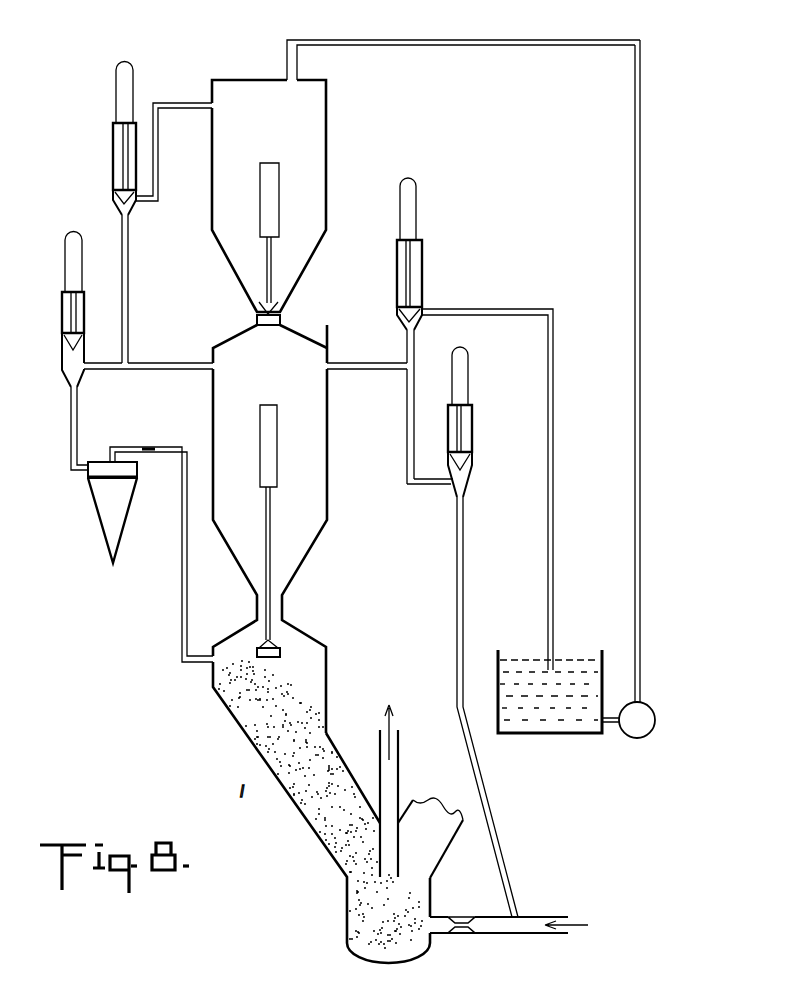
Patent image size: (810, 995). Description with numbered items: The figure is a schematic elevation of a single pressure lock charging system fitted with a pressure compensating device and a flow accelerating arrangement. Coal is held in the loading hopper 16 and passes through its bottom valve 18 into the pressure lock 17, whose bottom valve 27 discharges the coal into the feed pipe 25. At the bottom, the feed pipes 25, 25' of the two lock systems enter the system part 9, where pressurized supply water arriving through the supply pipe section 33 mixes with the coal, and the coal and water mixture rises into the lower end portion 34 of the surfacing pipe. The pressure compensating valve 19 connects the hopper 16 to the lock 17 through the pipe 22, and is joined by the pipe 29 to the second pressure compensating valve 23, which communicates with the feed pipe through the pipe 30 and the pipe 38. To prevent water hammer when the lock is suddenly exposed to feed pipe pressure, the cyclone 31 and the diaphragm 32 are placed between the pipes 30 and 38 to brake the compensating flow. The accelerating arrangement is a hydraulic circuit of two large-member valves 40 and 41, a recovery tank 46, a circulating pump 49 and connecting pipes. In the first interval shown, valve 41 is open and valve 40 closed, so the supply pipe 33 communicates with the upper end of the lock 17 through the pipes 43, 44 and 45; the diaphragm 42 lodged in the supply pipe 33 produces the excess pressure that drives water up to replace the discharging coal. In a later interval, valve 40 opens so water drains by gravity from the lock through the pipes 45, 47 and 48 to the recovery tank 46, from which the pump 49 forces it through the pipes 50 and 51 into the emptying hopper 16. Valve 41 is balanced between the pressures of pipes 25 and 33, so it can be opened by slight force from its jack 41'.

The system part 9 is at (353, 969).
The loading hopper 16 is at (246, 92).
The pressure lock 17 is at (216, 402).
The bottom valve 18 is at (257, 319).
The pressure compensating valve 19 is at (118, 153).
The pipe 22 is at (163, 366).
The second pressure compensating valve 23 is at (62, 314).
The feed pipe 25 is at (288, 802).
The feed pipe 25' is at (439, 838).
The bottom valve 27 is at (284, 652).
The pipe 29 is at (101, 366).
The pipe 30 is at (70, 428).
The cyclone 31 is at (98, 510).
The diaphragm 32 is at (147, 446).
The supply pipe bottom end section 33 is at (507, 920).
The lower end portion of surfacing pipe 34 is at (392, 770).
The pipe 38 is at (182, 611).
The valve 40 is at (418, 262).
The valve 41 is at (479, 451).
The jack 41' is at (479, 376).
The diaphragm 42 is at (462, 934).
The pipe 43 is at (464, 578).
The pipe 44 is at (407, 438).
The pipe 45 is at (360, 361).
The recovery tank 46 is at (546, 718).
The pipe 47 is at (490, 312).
The pipe 48 is at (548, 496).
The circulating pump 49 is at (636, 731).
The pipe 50 is at (641, 448).
The pipe 51 is at (468, 40).